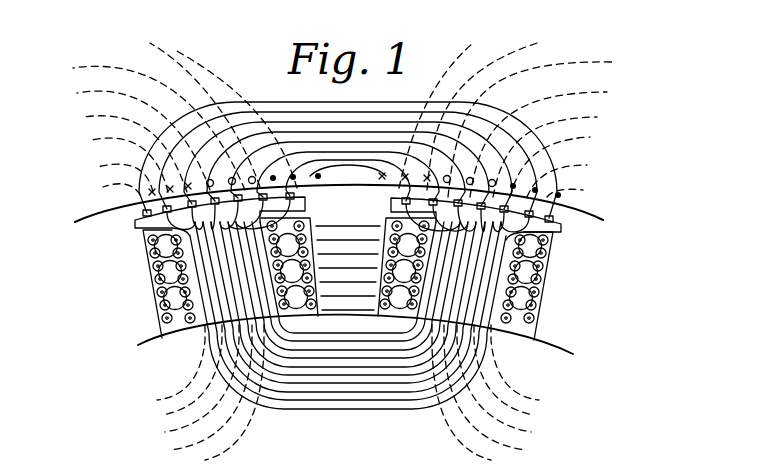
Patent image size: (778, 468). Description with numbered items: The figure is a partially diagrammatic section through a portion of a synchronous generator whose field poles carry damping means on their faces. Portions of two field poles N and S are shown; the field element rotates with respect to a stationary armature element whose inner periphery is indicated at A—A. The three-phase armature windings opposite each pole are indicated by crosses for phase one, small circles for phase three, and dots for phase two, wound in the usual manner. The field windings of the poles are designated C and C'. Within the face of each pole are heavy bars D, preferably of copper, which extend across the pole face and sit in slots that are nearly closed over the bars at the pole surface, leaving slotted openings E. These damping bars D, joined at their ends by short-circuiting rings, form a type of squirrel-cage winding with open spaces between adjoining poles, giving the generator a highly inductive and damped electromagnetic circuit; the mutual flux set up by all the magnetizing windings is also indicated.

The inner periphery of the stationary armature element A is at (339, 203).
The field winding C is at (219, 264).
The field winding C' is at (472, 263).
The heavy damping bars D is at (193, 187).
The slotted openings E is at (178, 190).
The field pole N is at (220, 238).
The field pole S is at (476, 236).